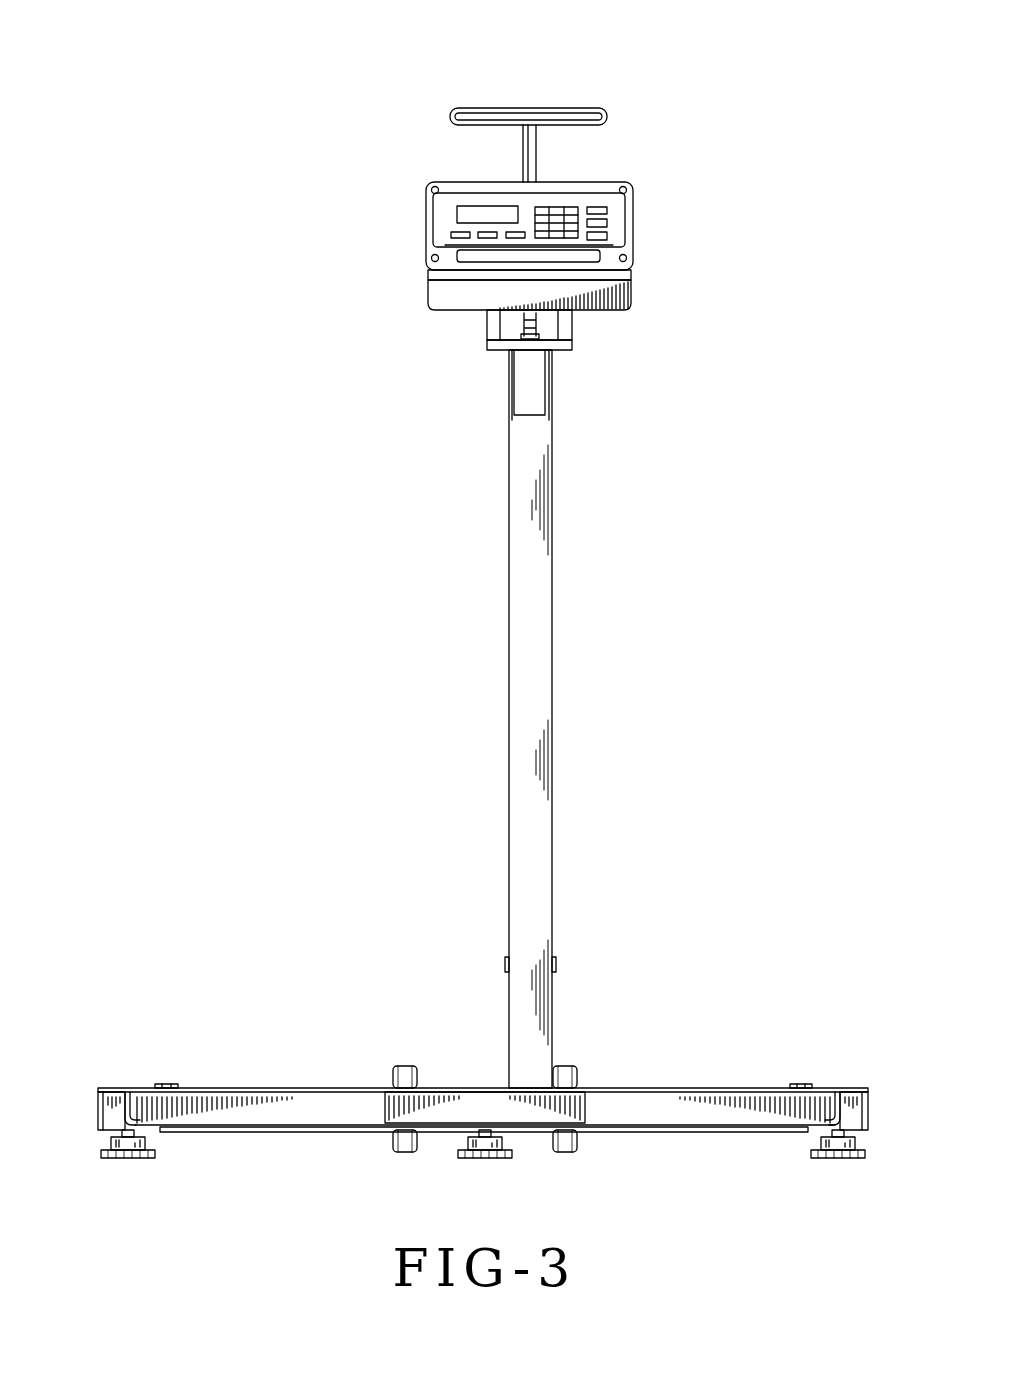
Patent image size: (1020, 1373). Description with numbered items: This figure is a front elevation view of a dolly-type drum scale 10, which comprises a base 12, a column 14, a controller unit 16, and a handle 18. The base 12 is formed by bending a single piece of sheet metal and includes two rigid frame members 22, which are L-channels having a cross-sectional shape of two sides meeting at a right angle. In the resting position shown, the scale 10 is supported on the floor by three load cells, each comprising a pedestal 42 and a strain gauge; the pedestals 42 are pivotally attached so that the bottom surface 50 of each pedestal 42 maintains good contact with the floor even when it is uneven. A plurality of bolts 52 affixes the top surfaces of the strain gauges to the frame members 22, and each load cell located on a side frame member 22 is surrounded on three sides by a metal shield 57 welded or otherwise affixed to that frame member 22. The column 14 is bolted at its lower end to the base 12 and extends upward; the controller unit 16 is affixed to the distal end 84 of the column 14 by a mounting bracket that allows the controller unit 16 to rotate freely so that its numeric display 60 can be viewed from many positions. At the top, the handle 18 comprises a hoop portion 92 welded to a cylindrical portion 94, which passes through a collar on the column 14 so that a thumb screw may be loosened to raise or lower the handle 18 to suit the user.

The dolly-type drum scale 10 is at (366, 642).
The base 12 is at (649, 1077).
The column 14 is at (563, 616).
The controller unit 16 is at (422, 235).
The handle 18 is at (575, 98).
The rigid frame members 22 is at (110, 1087).
The pedestal 42 is at (117, 1172).
The bottom surface 50 is at (147, 1157).
The bolts 52 is at (168, 1083).
The metal shield 57 is at (112, 1117).
The numeric display 60 is at (487, 210).
The distal end 84 is at (554, 353).
The hoop portion 92 is at (478, 119).
The cylindrical portion 94 is at (535, 158).